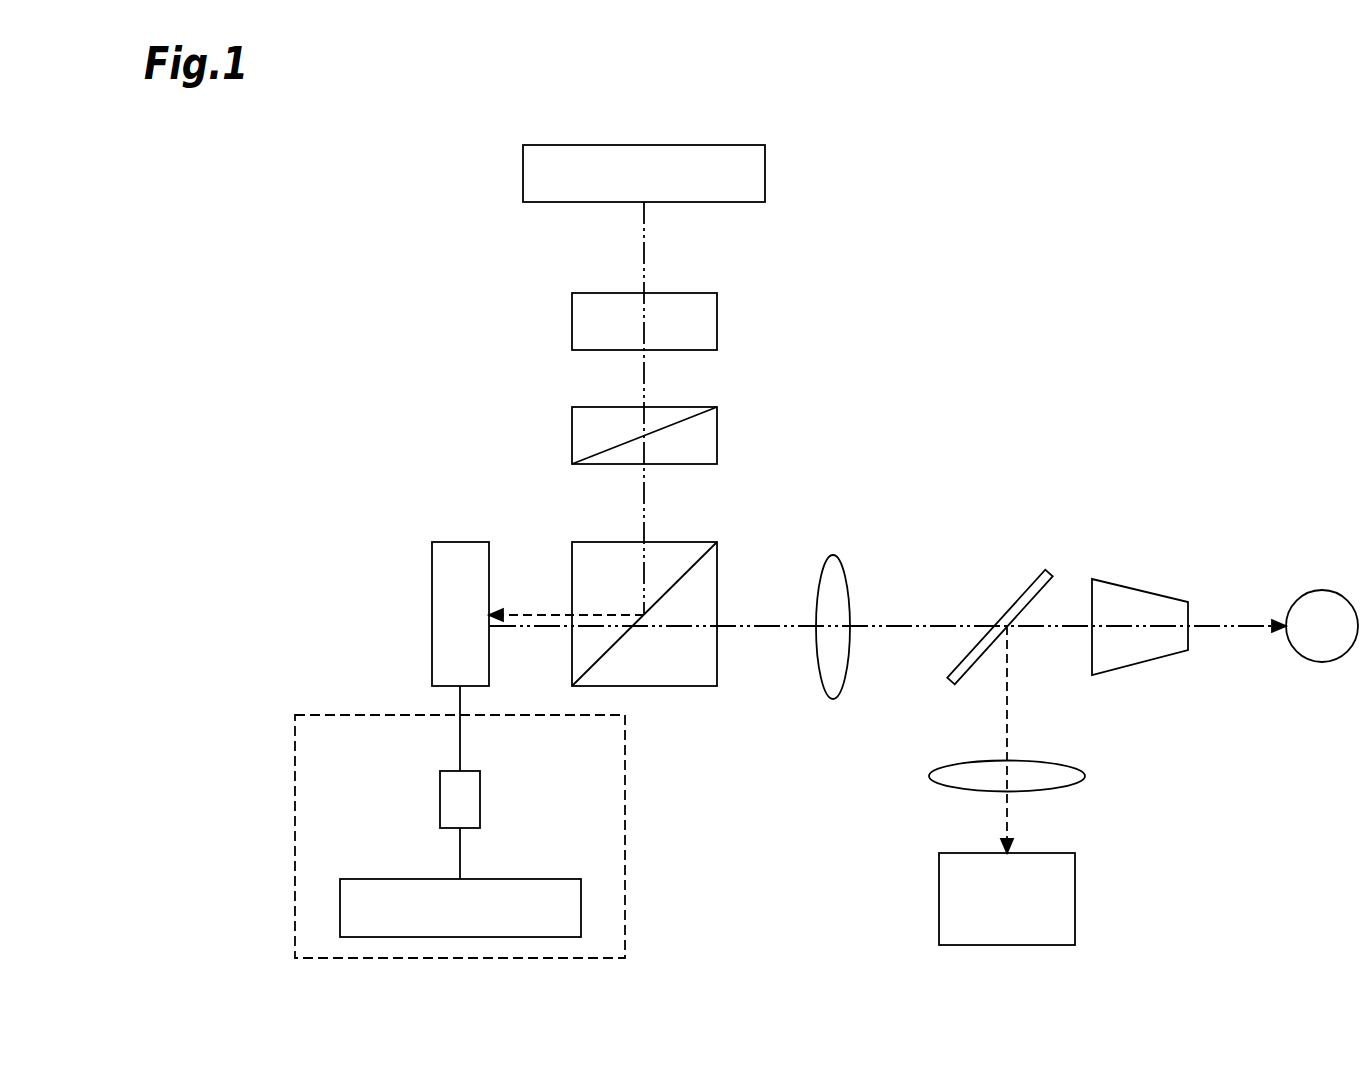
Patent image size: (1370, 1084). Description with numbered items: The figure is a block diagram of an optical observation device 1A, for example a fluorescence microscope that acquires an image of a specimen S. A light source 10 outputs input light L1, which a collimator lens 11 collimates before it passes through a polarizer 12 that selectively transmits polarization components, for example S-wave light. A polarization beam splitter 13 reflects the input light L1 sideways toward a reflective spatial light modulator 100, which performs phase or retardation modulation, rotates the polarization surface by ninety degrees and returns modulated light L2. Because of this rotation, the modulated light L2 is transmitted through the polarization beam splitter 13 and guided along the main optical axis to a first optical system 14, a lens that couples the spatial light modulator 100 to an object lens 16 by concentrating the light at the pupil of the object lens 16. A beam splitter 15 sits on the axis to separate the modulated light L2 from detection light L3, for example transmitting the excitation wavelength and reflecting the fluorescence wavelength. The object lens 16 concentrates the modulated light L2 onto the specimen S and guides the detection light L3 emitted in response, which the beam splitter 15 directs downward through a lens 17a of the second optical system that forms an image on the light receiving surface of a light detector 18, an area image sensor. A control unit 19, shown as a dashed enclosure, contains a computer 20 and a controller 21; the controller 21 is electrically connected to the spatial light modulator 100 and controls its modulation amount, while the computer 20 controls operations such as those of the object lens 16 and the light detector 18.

The optical observation device 1A is at (927, 143).
The light source 10 is at (766, 171).
The collimator lens 11 is at (718, 321).
The polarizer 12 is at (718, 434).
The polarization beam splitter 13 is at (708, 541).
The first optical system 14 is at (834, 555).
The beam splitter 15 is at (1049, 572).
The object lens 16 is at (1140, 588).
The lens 17a is at (1086, 776).
The light detector 18 is at (1076, 883).
The control unit 19 is at (626, 760).
The computer 20 is at (395, 878).
The controller 21 is at (481, 797).
The spatial light modulator 100 is at (431, 569).
The input light L1 is at (645, 263).
The modulated light L2 is at (545, 629).
The detection light L3 is at (1008, 713).
The specimen S is at (1322, 590).